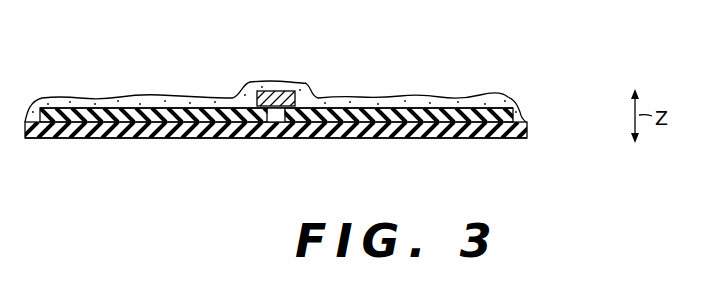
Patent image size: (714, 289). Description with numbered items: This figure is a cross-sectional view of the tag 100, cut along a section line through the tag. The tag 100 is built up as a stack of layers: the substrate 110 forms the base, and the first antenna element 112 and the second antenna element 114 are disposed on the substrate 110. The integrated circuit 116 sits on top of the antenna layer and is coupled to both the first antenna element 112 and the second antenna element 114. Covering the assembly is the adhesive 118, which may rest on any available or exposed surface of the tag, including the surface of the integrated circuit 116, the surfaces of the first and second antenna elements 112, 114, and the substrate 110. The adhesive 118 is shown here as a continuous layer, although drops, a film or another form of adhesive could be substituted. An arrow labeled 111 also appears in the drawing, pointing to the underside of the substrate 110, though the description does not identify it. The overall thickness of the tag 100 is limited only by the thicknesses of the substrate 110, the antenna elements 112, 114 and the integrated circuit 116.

The tag 100 is at (310, 120).
The substrate 110 is at (97, 130).
The bottom surface of substrate 111 is at (160, 152).
The first antenna element 112 is at (447, 112).
The second antenna element 114 is at (98, 114).
The integrated circuit 116 is at (272, 95).
The adhesive 118 is at (183, 100).